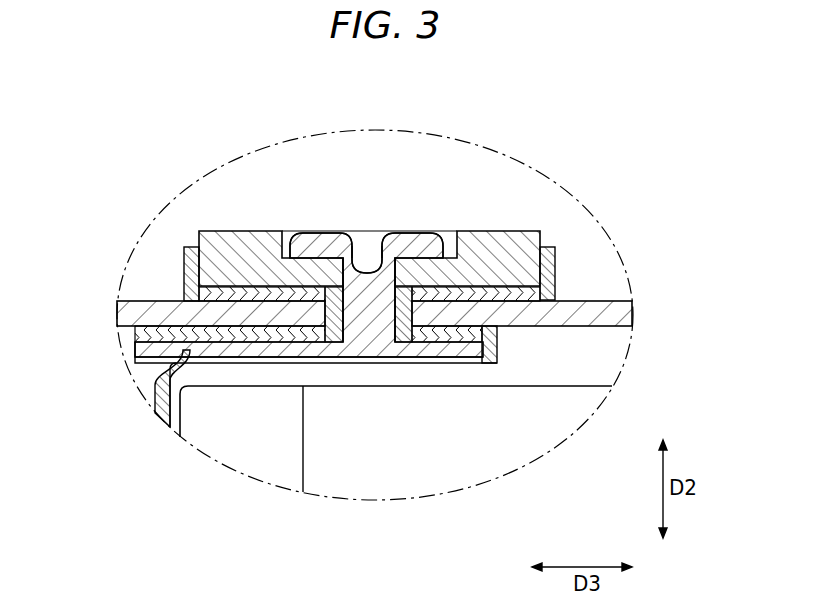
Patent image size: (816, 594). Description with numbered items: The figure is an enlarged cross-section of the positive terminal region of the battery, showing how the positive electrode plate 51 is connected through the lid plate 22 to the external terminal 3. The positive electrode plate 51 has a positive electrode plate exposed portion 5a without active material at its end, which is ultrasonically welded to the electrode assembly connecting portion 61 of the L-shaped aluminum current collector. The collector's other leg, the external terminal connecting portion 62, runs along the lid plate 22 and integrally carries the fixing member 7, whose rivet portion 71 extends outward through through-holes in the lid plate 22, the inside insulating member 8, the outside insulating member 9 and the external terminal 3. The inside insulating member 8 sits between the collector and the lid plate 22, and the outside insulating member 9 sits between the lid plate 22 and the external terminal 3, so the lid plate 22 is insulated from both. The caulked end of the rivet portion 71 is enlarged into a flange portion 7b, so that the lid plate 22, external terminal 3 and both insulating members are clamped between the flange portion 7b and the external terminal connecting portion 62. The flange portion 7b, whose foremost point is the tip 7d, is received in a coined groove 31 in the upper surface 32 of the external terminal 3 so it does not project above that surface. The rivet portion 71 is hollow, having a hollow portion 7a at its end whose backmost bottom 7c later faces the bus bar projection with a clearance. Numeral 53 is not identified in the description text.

The external terminal 3 is at (362, 202).
The groove 31 is at (293, 231).
The upper surface 32 is at (208, 232).
The fixing member 7 is at (309, 204).
The rivet portion 71 is at (309, 204).
The hollow portion 7a is at (373, 252).
The flange portion 7b is at (305, 248).
The bottom 7c is at (358, 246).
The tip 7d is at (333, 232).
The outside insulating member 9 is at (548, 270).
The lid plate 22 is at (613, 313).
The electrode assembly connecting portion 61 is at (163, 393).
The external terminal connecting portion 62 is at (433, 350).
The inside insulating member 8 is at (490, 355).
The positive electrode plate exposed portion 5a is at (391, 464).
The positive electrode plate 51 is at (391, 464).
The housing partition 53 is at (377, 477).